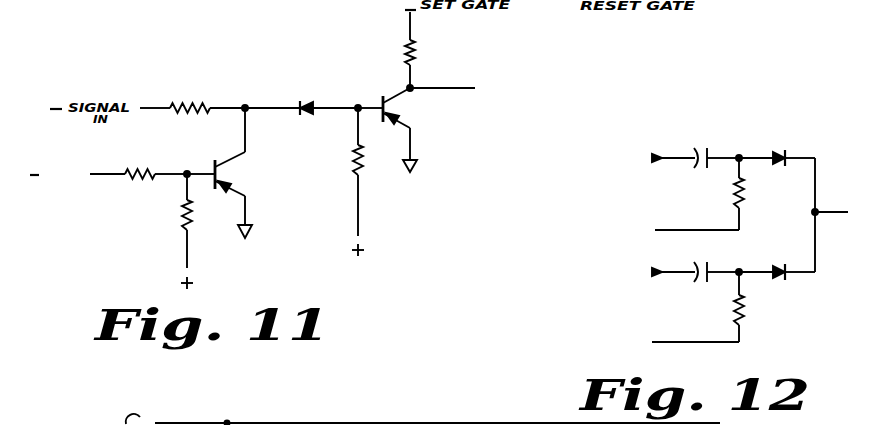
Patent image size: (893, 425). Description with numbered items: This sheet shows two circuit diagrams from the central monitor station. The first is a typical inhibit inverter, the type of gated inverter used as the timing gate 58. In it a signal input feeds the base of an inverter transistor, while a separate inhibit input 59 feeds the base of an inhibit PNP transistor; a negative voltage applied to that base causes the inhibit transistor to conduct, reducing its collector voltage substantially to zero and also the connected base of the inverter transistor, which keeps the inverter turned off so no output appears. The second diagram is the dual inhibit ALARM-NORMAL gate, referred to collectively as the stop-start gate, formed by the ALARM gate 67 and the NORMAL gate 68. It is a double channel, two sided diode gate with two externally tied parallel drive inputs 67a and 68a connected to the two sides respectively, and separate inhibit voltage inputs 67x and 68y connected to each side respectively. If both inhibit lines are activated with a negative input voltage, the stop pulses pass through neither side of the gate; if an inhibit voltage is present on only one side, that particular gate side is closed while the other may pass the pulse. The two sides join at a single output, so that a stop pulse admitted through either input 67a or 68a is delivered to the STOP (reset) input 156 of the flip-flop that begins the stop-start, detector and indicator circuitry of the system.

In FIG. 11, the timing gate 58 is at (283, 70).
In FIG. 11, the inhibit input line 59 is at (100, 175).
In FIG. 12, the ALARM gate 67 is at (731, 143).
In FIG. 12, the parallel input 67a is at (662, 160).
In FIG. 12, the inhibit voltage input 67x is at (676, 231).
In FIG. 12, the NORMAL gate 68 is at (753, 330).
In FIG. 12, the parallel input 68a is at (662, 273).
In FIG. 12, the inhibit voltage input 68y is at (687, 343).
In FIG. 12, the STOP (reset) input 156 is at (833, 213).